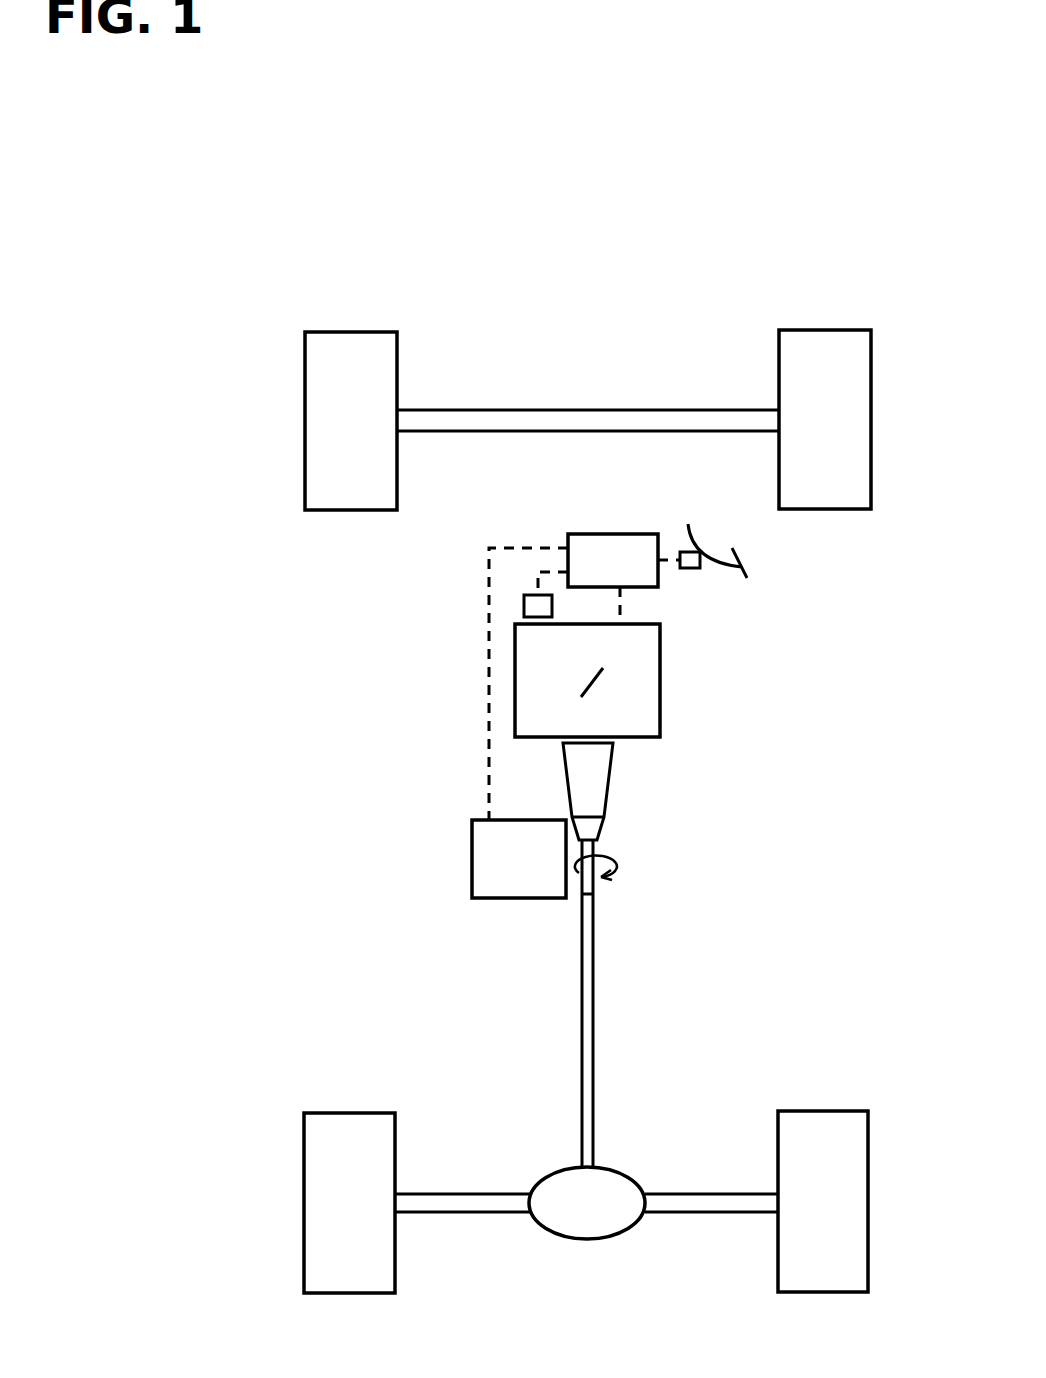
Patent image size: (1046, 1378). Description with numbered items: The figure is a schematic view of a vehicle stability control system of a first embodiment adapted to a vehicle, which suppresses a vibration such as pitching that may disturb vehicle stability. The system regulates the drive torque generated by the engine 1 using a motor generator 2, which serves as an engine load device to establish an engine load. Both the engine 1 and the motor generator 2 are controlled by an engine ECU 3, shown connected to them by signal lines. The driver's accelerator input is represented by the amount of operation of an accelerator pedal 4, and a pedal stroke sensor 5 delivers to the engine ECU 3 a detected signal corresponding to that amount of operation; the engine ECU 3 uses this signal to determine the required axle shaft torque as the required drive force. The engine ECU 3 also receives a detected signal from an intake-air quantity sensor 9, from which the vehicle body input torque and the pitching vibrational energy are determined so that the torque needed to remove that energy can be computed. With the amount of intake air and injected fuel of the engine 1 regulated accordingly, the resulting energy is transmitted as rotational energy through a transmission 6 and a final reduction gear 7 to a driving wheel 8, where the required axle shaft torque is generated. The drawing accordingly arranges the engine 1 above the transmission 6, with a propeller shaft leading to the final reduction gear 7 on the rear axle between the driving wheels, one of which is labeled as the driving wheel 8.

The engine 1 is at (661, 680).
The motor generator 2 is at (517, 898).
The engine ECU 3 is at (620, 534).
The accelerator pedal 4 is at (735, 551).
The pedal stroke sensor 5 is at (690, 568).
The transmission 6 is at (612, 783).
The final reduction gear 7 is at (596, 1240).
The driving wheel 8 is at (869, 1152).
The intake-air quantity sensor 9 is at (524, 603).